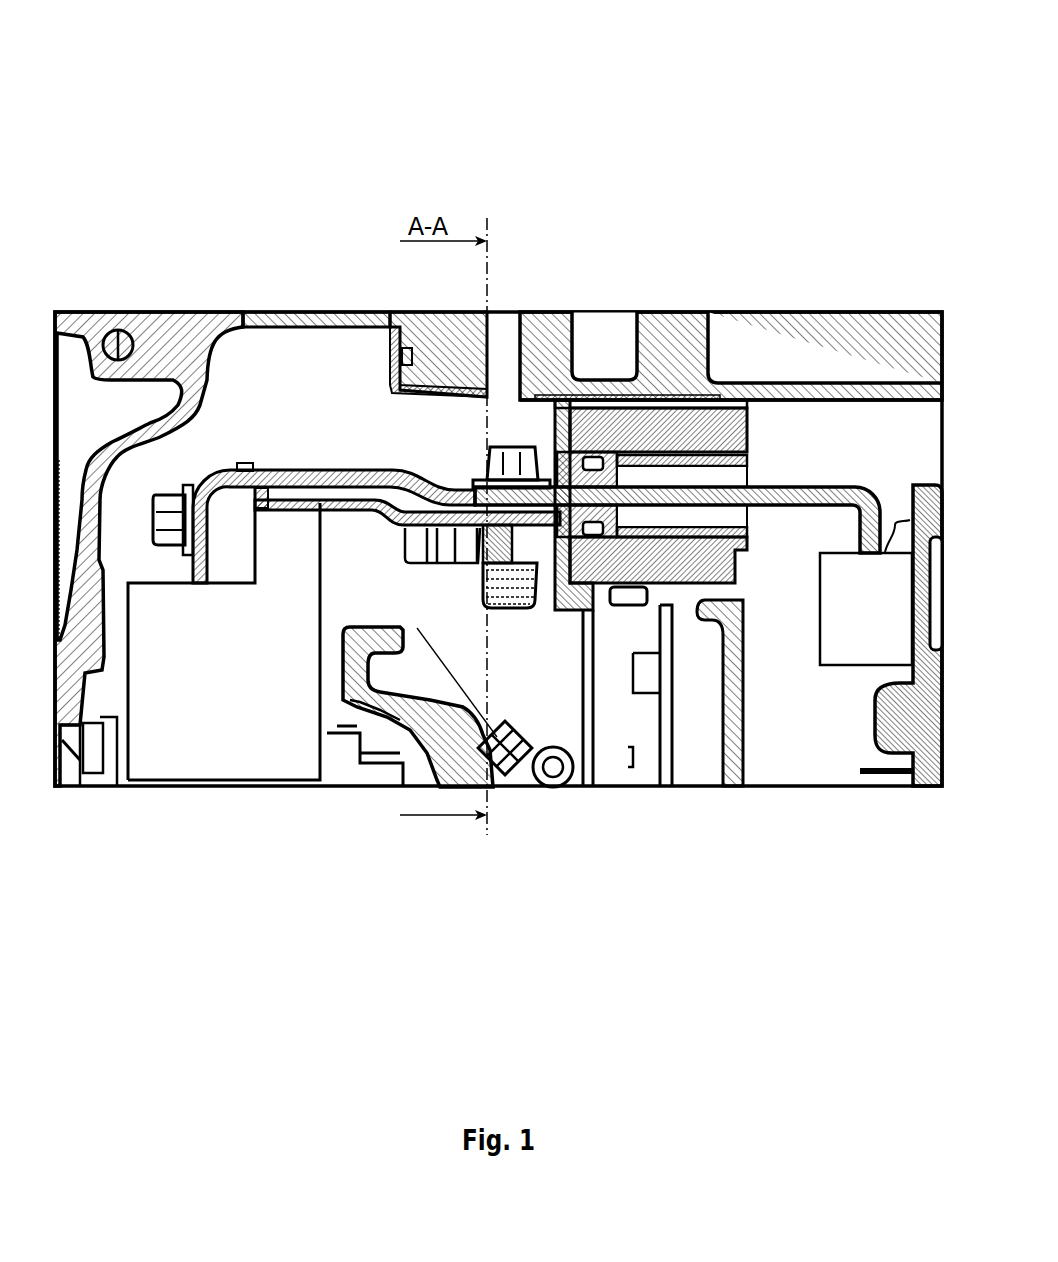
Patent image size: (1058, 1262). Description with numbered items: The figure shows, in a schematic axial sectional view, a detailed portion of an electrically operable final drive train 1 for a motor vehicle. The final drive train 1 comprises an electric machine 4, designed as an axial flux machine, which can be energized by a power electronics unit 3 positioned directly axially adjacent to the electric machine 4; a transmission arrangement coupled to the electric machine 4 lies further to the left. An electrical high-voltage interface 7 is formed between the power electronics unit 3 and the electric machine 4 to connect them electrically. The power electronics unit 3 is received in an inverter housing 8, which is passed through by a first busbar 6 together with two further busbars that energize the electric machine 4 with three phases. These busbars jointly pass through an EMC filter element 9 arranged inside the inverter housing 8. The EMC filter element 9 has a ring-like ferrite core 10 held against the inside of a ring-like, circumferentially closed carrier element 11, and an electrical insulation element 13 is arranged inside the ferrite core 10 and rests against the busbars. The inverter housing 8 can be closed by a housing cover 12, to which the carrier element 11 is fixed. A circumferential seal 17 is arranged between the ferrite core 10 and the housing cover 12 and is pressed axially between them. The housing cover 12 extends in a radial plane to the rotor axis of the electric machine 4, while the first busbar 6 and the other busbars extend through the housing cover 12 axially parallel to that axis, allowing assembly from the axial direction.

The final drive train 1 is at (286, 168).
The power electronics unit 3 is at (828, 740).
The electric machine 4 is at (197, 805).
The first busbar 6 is at (793, 483).
The electrical high-voltage interface 7 is at (462, 441).
The inverter housing 8 is at (660, 340).
The EMC filter element 9 is at (605, 385).
The ferrite core 10 is at (675, 433).
The carrier element 11 is at (628, 605).
The housing cover 12 is at (580, 630).
The electrical insulation element 13 is at (731, 274).
The circumferential seal 17 is at (550, 445).